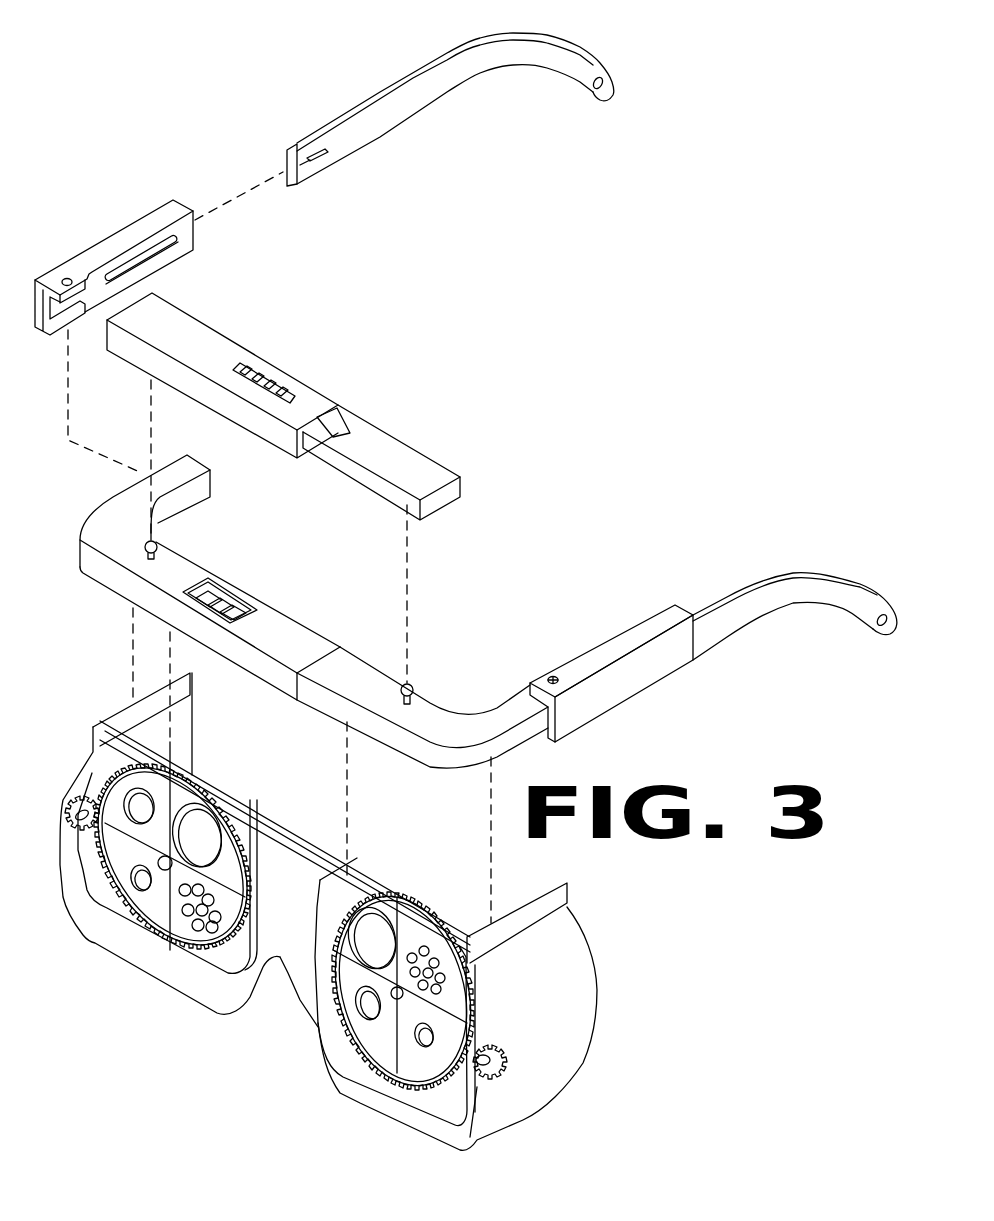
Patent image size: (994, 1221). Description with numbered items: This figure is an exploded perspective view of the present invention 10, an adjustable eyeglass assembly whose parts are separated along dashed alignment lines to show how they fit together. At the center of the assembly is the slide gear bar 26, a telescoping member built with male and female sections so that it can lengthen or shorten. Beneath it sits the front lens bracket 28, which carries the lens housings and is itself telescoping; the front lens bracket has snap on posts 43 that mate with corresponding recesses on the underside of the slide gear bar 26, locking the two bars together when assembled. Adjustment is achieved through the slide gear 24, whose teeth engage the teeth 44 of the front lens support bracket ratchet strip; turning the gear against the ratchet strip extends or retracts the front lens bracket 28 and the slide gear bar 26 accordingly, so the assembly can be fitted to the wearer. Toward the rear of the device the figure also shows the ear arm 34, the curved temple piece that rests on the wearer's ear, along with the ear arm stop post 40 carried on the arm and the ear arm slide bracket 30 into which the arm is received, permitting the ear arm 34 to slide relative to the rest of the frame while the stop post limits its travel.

The present invention 10 is at (591, 562).
The slide gear 24 is at (277, 377).
The slide gear bar 26 is at (323, 393).
The front lens bracket 28 is at (343, 650).
The ear arm slide bracket 30 is at (122, 232).
The ear arm 34 is at (405, 118).
The ear arm stop post 40 is at (313, 163).
The snap on posts 43 is at (154, 559).
The teeth of the front lens support bracket ratchet strip 44 is at (223, 593).